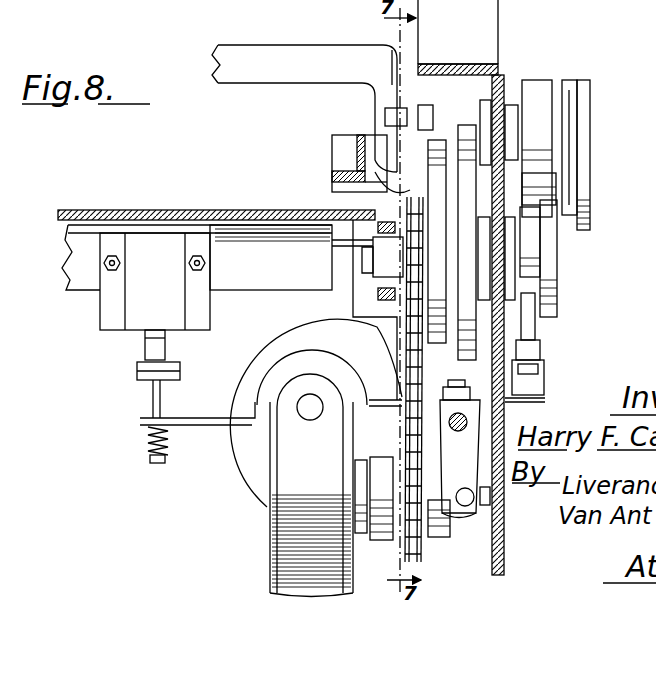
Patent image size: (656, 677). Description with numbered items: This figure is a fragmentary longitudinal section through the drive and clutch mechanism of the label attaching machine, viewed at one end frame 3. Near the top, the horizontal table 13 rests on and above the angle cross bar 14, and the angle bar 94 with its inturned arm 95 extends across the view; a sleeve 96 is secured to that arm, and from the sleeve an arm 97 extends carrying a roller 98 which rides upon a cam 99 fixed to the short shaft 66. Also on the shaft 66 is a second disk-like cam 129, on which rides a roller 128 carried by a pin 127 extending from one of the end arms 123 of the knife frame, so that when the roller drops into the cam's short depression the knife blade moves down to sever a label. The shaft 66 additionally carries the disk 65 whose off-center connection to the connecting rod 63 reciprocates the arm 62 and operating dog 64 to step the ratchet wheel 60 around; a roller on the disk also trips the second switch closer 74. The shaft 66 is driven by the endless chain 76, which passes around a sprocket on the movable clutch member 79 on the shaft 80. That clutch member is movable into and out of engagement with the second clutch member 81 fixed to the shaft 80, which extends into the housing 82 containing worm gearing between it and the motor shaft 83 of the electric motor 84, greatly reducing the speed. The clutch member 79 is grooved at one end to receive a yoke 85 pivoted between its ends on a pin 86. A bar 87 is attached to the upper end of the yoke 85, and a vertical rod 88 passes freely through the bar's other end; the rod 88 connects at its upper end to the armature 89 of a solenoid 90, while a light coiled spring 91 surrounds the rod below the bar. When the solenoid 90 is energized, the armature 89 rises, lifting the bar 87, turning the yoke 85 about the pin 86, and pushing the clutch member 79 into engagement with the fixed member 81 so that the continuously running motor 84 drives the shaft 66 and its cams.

The end frame 3 is at (500, 70).
The horizontal table 13 is at (160, 209).
The angle cross bar 14 is at (183, 273).
The ratchet wheel 60 is at (540, 176).
The arm 62 is at (587, 118).
The connecting rod 63 is at (567, 142).
The operating dog 64 is at (536, 100).
The disk 65 is at (547, 270).
The short shaft 66 is at (530, 258).
The second switch closer 74 is at (532, 322).
The endless chain 76 is at (418, 326).
The movable clutch member 79 is at (438, 520).
The shaft 80 is at (494, 498).
The second clutch member 81 is at (385, 541).
The housing 82 is at (303, 487).
The motor shaft 83 is at (310, 420).
The electric motor 84 is at (237, 462).
The yoke 85 is at (471, 514).
The pin 86 is at (467, 422).
The bar 87 is at (380, 410).
The vertical rod 88 is at (150, 400).
The armature 89 is at (165, 343).
The solenoid 90 is at (137, 300).
The light coiled spring 91 is at (150, 440).
The angle bar 94 is at (255, 72).
The inturned arm 95 is at (390, 118).
The sleeve 96 is at (432, 112).
The arm 97 is at (486, 118).
The roller 98 is at (463, 125).
The cam 99 is at (521, 369).
The end arm 123 is at (355, 143).
The pin 127 is at (395, 189).
The roller 128 is at (390, 78).
The disk-like cam 129 is at (385, 238).